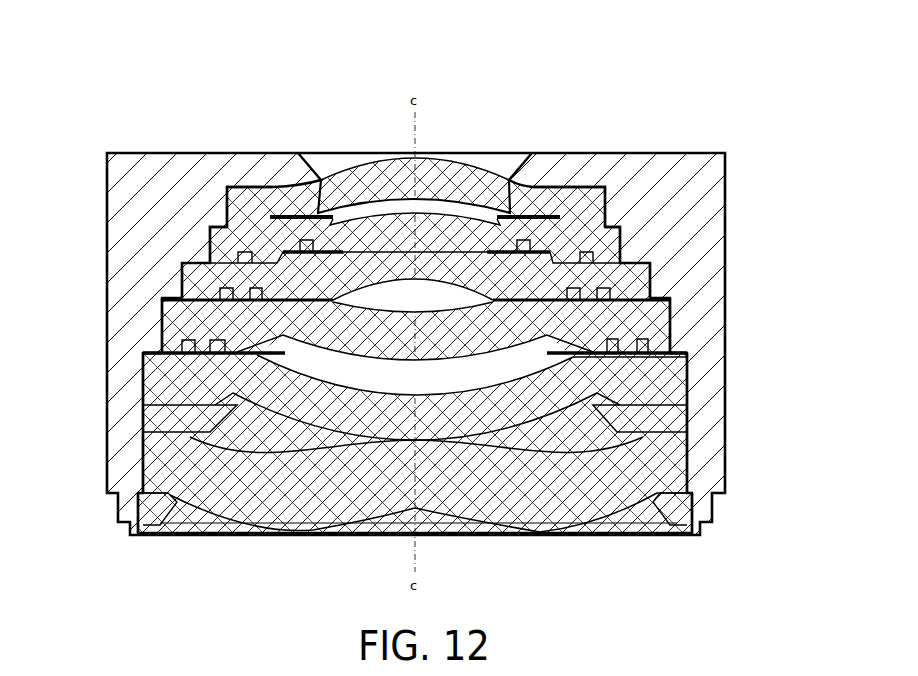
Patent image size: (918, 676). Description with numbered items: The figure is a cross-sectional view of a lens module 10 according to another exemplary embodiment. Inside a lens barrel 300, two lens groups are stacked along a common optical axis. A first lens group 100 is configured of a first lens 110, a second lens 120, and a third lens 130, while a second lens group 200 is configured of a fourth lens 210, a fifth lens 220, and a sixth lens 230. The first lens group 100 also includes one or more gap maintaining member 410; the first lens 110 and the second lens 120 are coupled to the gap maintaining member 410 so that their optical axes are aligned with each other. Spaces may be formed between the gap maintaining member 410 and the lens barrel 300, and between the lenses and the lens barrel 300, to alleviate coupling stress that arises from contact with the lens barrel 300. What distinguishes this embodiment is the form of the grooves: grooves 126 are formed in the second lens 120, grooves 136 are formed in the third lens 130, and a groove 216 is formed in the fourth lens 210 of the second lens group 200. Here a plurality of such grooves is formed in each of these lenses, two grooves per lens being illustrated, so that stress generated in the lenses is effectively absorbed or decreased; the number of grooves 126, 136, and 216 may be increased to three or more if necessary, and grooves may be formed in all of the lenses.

The lens module 10 is at (627, 88).
The first lens group 100 is at (797, 180).
The first lens 110 is at (613, 202).
The second lens 120 is at (627, 240).
The third lens 130 is at (647, 277).
The grooves 126 is at (272, 217).
The grooves 136 is at (283, 254).
The second lens group 200 is at (797, 317).
The fourth lens 210 is at (670, 322).
The groove 216 is at (176, 340).
The fifth lens 220 is at (688, 377).
The sixth lens 230 is at (688, 455).
The lens barrel 300 is at (165, 180).
The gap maintaining member 410 is at (152, 415).